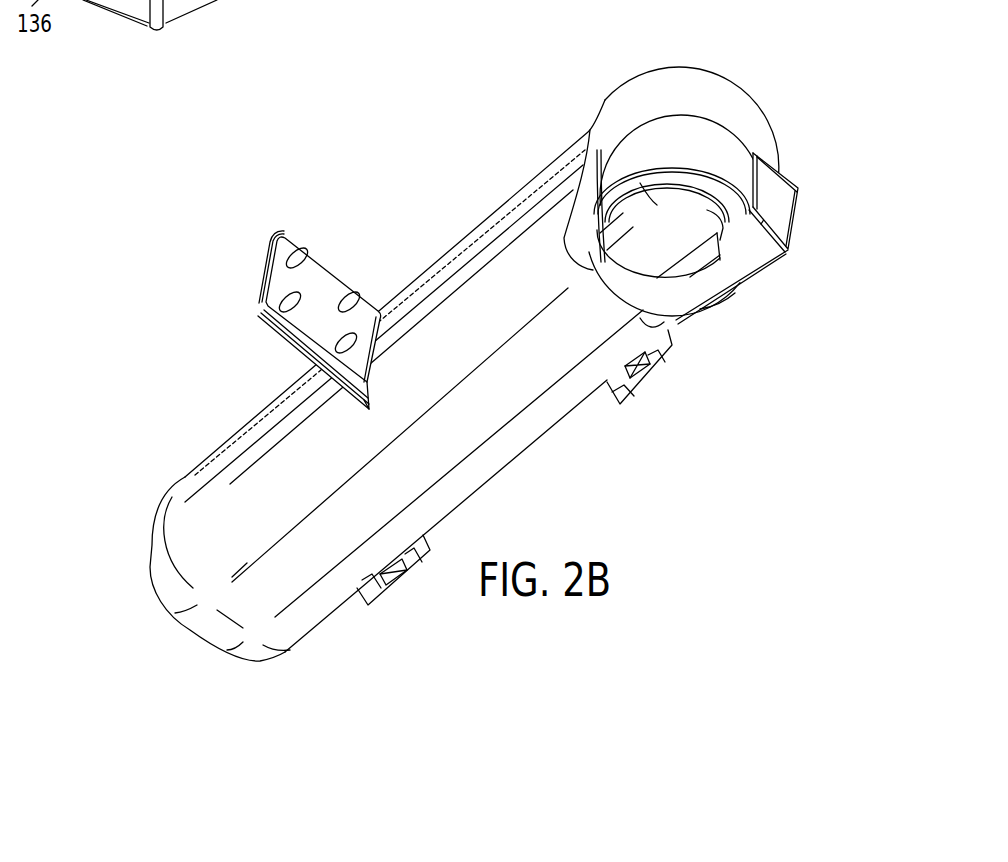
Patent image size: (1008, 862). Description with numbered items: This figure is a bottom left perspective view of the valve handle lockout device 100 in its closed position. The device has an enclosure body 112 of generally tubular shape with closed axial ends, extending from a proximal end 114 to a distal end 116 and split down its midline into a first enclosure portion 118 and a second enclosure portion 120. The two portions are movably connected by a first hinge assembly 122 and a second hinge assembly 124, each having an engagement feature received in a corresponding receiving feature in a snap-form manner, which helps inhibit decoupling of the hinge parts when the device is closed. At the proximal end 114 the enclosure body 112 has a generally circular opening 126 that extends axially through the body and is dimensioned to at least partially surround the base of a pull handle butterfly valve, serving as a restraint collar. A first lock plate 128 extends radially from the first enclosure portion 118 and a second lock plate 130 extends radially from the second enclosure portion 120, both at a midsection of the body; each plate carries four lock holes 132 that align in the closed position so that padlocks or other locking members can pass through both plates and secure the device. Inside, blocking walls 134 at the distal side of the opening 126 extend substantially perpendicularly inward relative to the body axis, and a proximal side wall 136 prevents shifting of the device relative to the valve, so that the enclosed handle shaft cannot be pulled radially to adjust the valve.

The valve handle lockout device 100 is at (115, 290).
The enclosure body 112 is at (155, 532).
The proximal end 114 is at (768, 74).
The distal end 116 is at (146, 678).
The first enclosure portion 118 is at (473, 248).
The second enclosure portion 120 is at (560, 398).
The first hinge assembly 122 is at (647, 377).
The second hinge assembly 124 is at (393, 585).
The opening 126 is at (700, 175).
The first lock plate 128 is at (317, 275).
The second lock plate 130 is at (259, 274).
The lock holes 132 is at (292, 348).
The blocking walls 134 is at (667, 294).
The proximal side wall 136 is at (657, 140).